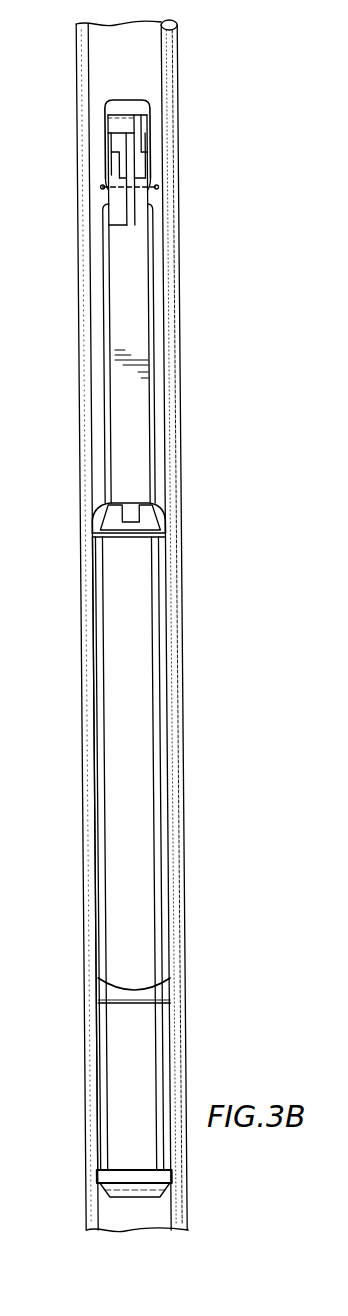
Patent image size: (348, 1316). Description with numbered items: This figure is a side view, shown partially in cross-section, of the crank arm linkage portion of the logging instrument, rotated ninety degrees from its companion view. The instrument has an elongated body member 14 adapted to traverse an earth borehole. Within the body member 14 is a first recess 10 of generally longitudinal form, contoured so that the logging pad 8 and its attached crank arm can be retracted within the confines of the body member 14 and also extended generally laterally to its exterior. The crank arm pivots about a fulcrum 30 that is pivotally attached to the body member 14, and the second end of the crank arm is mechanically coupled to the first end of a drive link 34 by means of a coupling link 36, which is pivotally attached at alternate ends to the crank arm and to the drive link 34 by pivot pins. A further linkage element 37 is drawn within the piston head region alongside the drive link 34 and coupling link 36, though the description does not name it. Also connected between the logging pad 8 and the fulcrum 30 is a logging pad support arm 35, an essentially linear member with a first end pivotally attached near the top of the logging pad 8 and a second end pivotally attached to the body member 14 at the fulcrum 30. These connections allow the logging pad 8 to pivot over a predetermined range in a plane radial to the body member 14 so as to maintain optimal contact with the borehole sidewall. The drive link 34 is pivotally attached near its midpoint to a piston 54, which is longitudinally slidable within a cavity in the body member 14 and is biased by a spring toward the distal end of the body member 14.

The body member 14 is at (177, 52).
The piston 54 is at (142, 108).
The drive link 34 is at (106, 125).
The bar 37 is at (145, 137).
The coupling link 36 is at (104, 150).
The fulcrum 30 is at (158, 187).
The logging pad support arm 35 is at (145, 393).
The first recess 10 is at (166, 520).
The logging pad 8 is at (163, 710).